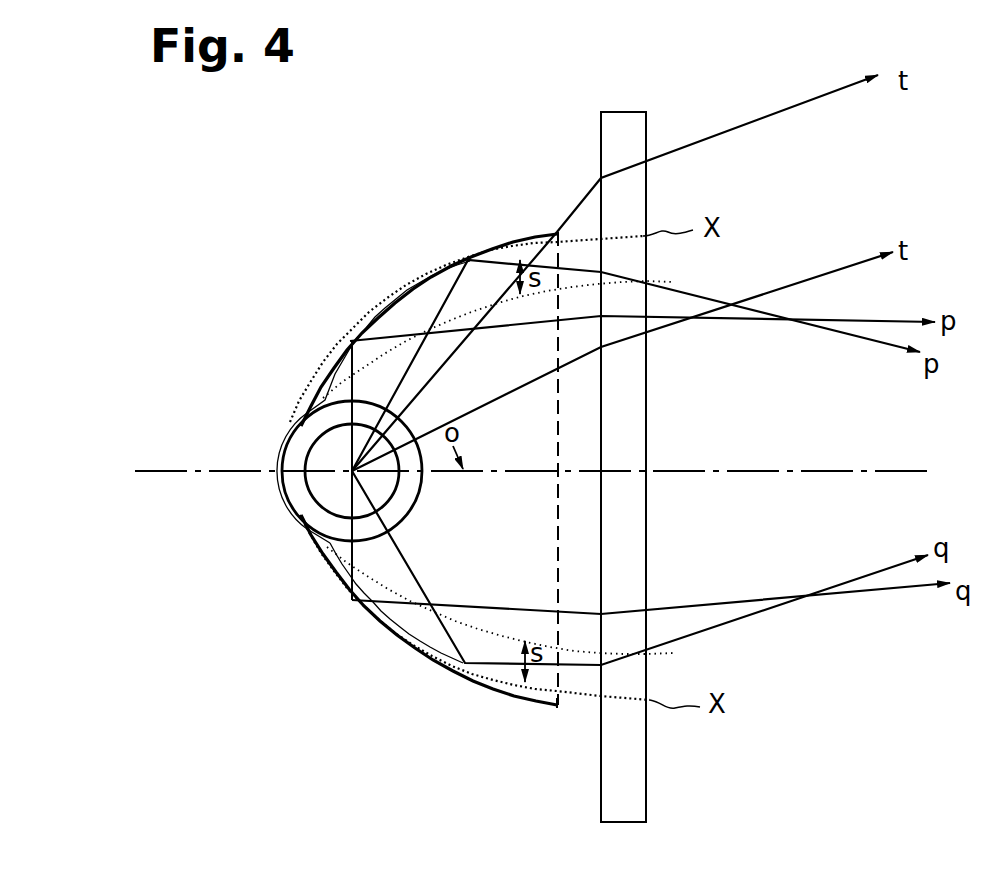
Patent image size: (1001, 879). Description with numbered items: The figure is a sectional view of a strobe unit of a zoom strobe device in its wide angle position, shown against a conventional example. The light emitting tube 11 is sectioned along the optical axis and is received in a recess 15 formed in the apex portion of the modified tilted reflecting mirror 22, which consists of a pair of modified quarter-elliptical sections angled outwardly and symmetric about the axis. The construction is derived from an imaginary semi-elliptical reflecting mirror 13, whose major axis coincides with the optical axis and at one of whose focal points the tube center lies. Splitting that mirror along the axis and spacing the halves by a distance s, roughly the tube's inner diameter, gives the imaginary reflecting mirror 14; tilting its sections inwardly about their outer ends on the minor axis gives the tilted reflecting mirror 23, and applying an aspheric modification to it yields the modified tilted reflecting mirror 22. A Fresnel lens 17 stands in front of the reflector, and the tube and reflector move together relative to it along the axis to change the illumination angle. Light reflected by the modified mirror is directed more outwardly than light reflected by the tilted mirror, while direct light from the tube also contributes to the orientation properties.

The light emitting tube 11 is at (330, 452).
The imaginary semi-elliptical reflecting mirror 13 is at (460, 313).
The imaginary reflecting mirror 14 is at (468, 262).
The recess 15 is at (277, 495).
The Fresnel lens 17 is at (600, 198).
The modified tilted reflecting mirror 22 is at (355, 328).
The tilted reflecting mirror 23 is at (403, 297).